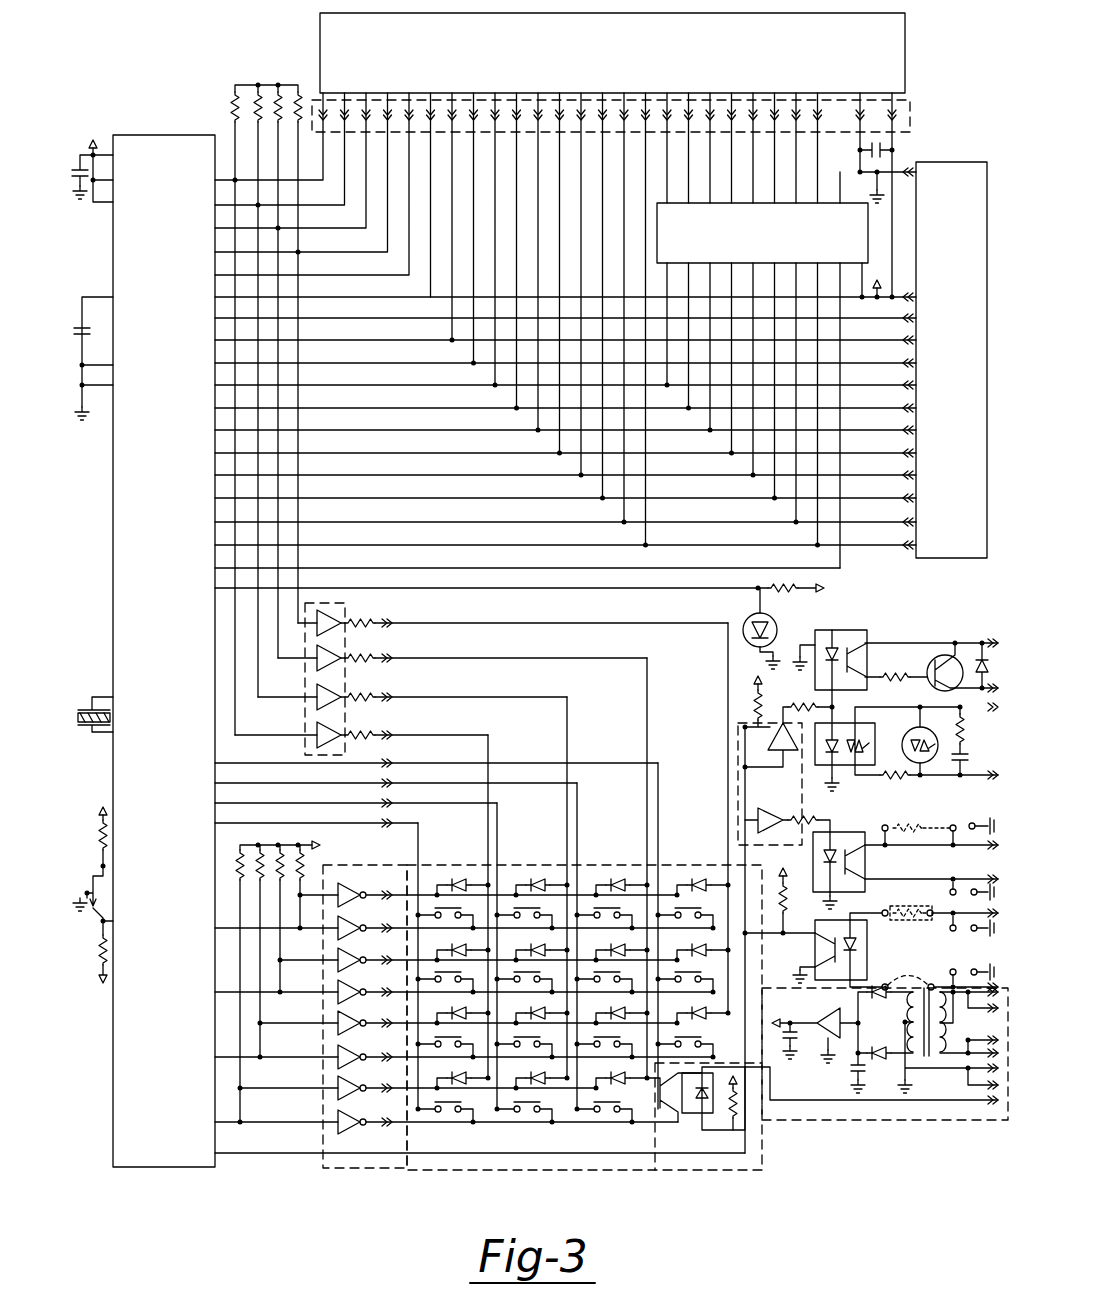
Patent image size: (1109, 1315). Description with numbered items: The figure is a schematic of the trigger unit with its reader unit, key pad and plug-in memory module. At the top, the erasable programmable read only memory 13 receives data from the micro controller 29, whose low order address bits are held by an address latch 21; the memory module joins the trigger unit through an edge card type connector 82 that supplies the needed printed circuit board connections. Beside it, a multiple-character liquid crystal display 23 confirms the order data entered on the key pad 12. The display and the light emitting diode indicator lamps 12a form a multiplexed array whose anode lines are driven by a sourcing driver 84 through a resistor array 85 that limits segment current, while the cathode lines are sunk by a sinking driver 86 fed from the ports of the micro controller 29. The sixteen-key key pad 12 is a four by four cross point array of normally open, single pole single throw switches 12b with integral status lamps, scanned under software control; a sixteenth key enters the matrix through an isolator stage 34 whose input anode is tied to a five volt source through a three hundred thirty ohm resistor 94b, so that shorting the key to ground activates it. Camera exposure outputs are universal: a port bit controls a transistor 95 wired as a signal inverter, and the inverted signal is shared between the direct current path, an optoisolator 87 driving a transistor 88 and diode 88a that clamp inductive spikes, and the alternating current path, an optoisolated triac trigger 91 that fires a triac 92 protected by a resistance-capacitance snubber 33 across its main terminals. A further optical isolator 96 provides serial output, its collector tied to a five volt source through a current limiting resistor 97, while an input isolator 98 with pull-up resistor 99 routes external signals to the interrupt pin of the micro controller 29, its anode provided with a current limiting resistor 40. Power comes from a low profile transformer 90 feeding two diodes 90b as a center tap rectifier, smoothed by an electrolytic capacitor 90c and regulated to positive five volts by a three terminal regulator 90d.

The erasable programmable read only memory 13 is at (882, 44).
The micro controller 29 is at (200, 171).
The address latch 21 is at (855, 264).
The liquid crystal display 23 is at (967, 214).
The edge card type connector 82 is at (906, 118).
The sourcing driver 84 is at (341, 614).
The resistor array 85 is at (372, 632).
The sinking driver 86 is at (365, 1016).
The key pad 12 is at (545, 1170).
The light emitting diode indicator lamps 12a is at (610, 880).
The single pole single throw switches 12b is at (458, 1122).
The relay driver 34 is at (729, 1138).
The 330 ohm resistor 94b is at (745, 1128).
The transistor 95 is at (750, 619).
The optoisolator 87 is at (838, 636).
The transistor 88 is at (942, 656).
The diode 88a is at (982, 643).
The optoisolated triac trigger 91 is at (860, 768).
The triac 92 is at (920, 766).
The snubber network 33 is at (965, 758).
The optocoupler 96 is at (840, 832).
The current limiting resistor 97 is at (930, 828).
The optocoupler 98 is at (867, 947).
The resistor 99 is at (788, 912).
The current limiting resistor 40 is at (906, 920).
The transformer 90 is at (876, 1081).
The diodes 90b is at (882, 1060).
The electrolytic capacitor 90c is at (850, 1072).
The three terminal regulator 90d is at (823, 1018).